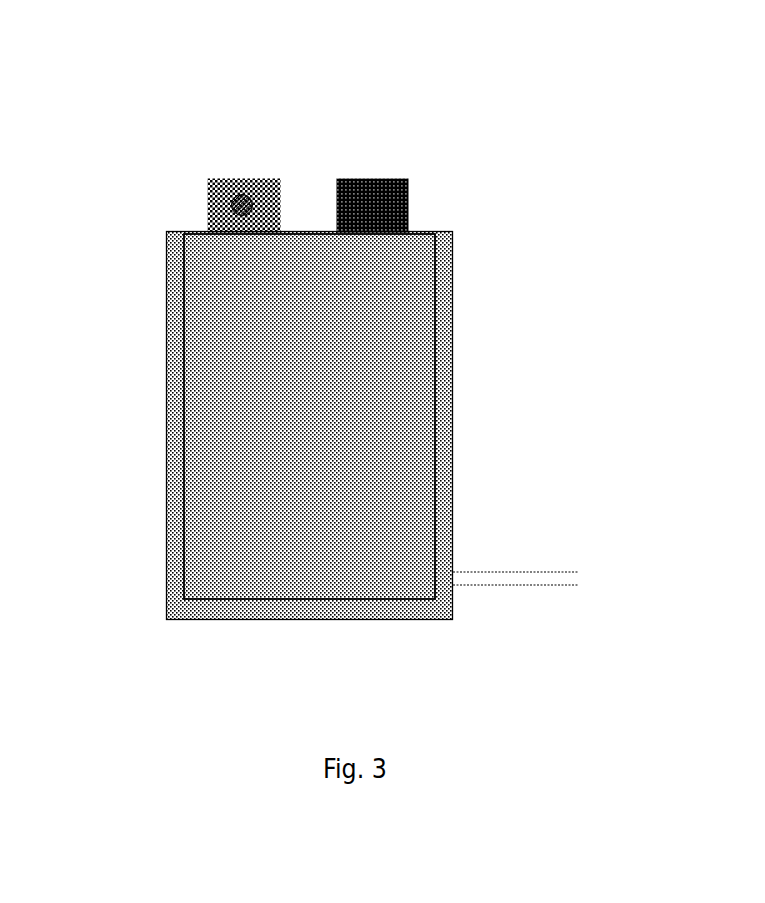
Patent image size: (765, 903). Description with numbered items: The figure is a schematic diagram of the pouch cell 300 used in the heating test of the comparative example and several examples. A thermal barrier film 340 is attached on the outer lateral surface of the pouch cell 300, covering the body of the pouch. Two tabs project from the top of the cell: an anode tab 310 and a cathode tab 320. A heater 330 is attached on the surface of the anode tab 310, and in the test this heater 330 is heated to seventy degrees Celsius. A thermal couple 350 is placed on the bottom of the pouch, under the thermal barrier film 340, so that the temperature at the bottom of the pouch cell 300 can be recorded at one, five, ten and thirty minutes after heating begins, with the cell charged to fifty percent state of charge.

The pouch cell 300 is at (106, 36).
The anode tab 310 is at (207, 165).
The cathode tab 320 is at (395, 167).
The heater 330 is at (232, 199).
The thermal barrier film 340 is at (395, 447).
The thermal couple 350 is at (487, 597).